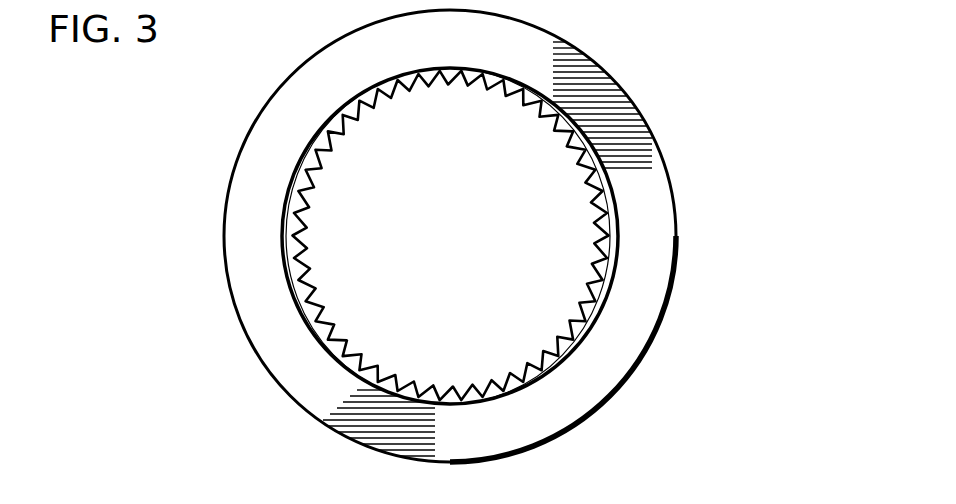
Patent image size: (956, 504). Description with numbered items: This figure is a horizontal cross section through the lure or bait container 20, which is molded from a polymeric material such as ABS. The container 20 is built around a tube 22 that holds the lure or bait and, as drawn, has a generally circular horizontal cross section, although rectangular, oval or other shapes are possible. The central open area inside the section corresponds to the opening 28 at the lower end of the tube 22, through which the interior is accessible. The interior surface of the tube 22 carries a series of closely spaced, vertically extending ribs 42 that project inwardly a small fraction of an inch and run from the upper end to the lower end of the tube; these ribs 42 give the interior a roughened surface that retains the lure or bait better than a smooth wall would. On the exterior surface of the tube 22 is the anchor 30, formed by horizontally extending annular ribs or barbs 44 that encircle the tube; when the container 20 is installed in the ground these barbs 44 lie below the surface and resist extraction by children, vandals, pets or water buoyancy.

The lure or bait container 20 is at (695, 82).
The tube 22 is at (278, 318).
The opening 28 is at (459, 203).
The anchor 30 is at (690, 338).
The ribs 42 is at (578, 157).
The annular ribs or barbs 44 is at (228, 183).